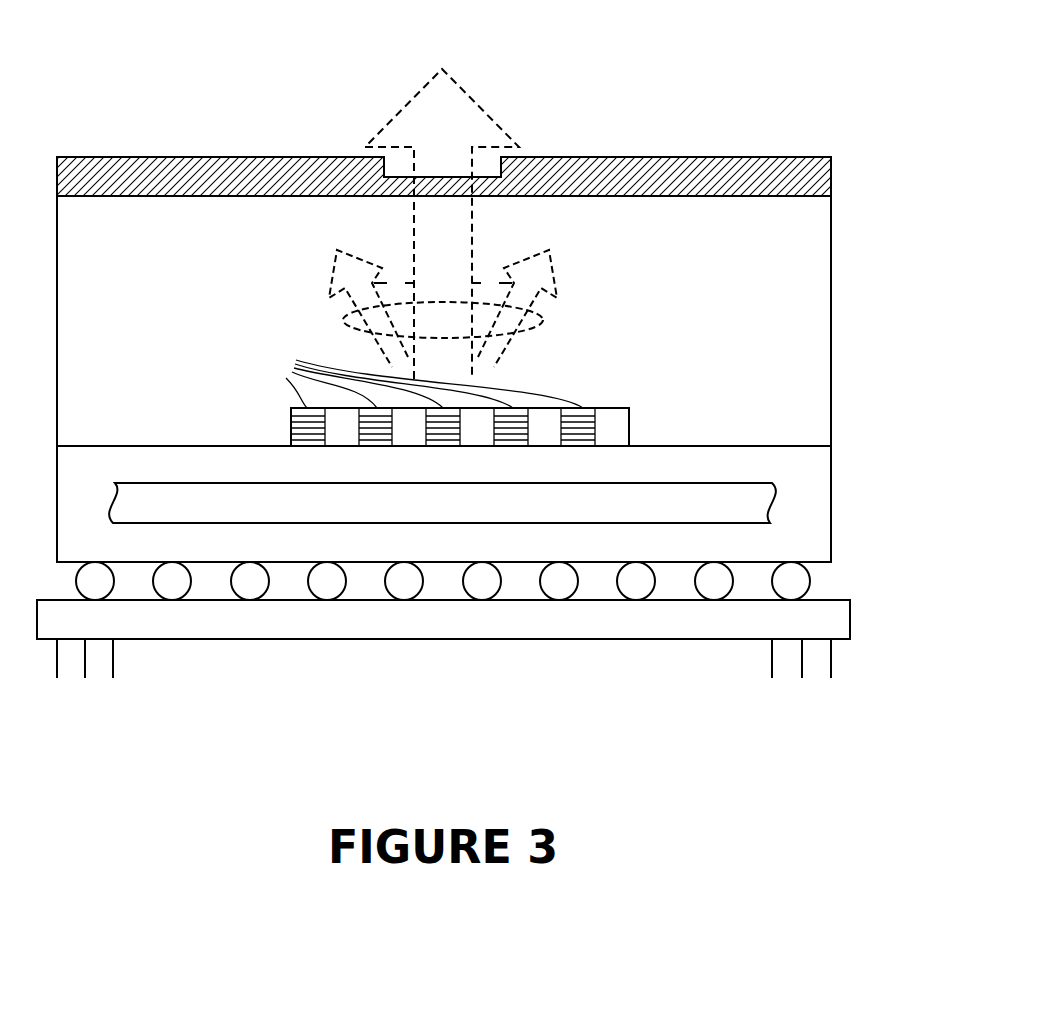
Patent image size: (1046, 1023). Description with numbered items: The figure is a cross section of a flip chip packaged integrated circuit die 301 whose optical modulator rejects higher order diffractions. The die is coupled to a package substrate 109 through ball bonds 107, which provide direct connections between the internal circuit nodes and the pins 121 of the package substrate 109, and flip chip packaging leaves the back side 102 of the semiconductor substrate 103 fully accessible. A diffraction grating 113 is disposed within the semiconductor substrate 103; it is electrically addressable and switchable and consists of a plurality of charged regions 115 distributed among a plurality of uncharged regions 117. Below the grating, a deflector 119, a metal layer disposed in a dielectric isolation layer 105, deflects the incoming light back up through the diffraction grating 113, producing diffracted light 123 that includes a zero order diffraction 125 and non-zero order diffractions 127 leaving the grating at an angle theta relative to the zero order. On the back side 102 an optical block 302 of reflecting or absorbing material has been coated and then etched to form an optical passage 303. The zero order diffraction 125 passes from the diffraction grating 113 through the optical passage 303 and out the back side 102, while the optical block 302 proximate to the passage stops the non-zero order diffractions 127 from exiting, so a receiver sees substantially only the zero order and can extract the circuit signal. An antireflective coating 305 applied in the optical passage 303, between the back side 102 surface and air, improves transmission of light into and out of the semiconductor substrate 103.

The flip chip packaged integrated circuit die 301 is at (870, 131).
The optical block 302 is at (142, 145).
The optical passage 303 is at (495, 197).
The antireflective coating 305 is at (392, 197).
The back side 102 is at (180, 197).
The semiconductor substrate 103 is at (818, 273).
The dielectric isolation layer 105 is at (820, 468).
The ball bonds 107 is at (485, 592).
The package substrate 109 is at (840, 620).
The diffraction grating 113 is at (598, 397).
The charged regions 115 is at (416, 380).
The uncharged regions 117 is at (348, 429).
The deflector 119 is at (700, 490).
The pins 121 is at (113, 686).
The diffracted light 123 is at (543, 318).
The zero order diffraction 125 is at (477, 89).
The non-zero order diffractions 127 is at (328, 275).